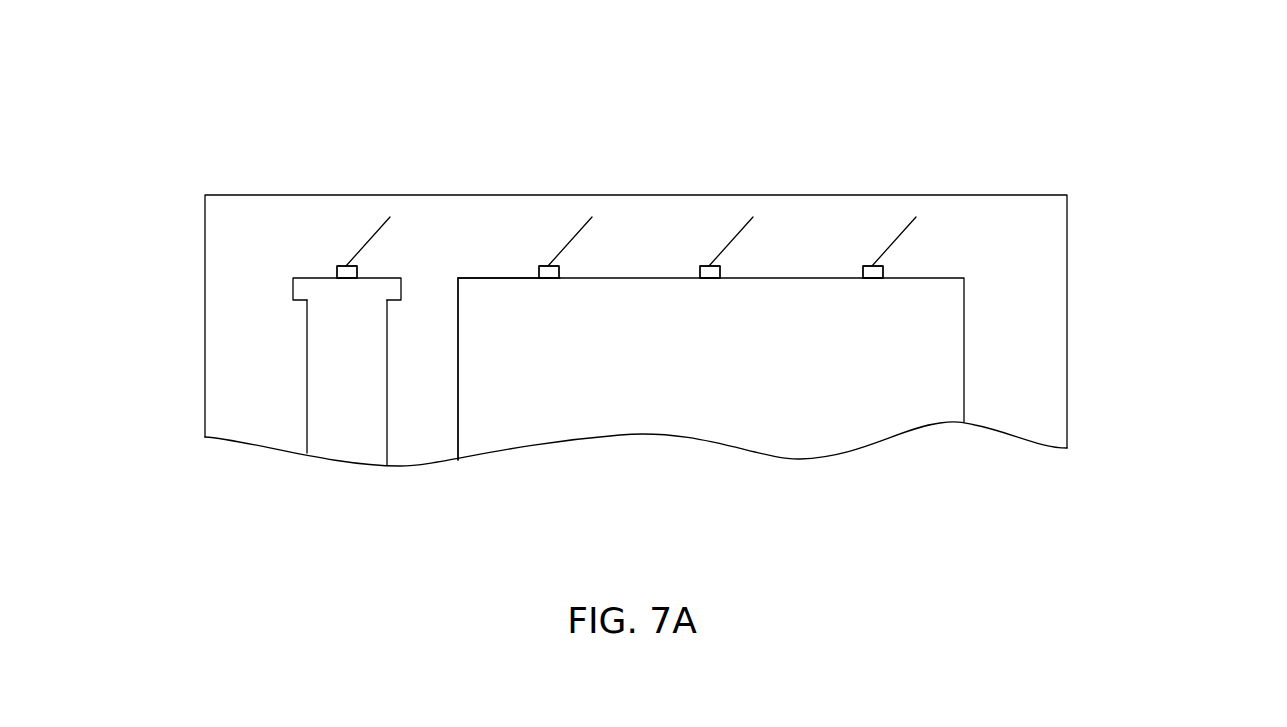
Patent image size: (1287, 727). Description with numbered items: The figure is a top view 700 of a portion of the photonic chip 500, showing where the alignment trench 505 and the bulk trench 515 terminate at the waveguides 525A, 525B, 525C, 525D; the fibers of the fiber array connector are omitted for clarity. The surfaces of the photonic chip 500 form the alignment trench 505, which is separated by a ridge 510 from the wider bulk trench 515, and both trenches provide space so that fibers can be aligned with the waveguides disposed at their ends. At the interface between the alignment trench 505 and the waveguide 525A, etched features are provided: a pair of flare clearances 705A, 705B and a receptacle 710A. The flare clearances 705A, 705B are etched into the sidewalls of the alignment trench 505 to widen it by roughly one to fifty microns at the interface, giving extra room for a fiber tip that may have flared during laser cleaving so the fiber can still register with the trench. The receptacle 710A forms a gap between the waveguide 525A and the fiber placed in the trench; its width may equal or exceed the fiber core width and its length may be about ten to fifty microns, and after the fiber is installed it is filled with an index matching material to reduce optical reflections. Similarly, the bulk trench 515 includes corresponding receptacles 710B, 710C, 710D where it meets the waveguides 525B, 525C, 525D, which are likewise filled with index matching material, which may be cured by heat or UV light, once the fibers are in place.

The top view 700 is at (1100, 45).
The photonic chip 500 is at (1067, 303).
The alignment trench 505 is at (344, 376).
The ridge 510 is at (423, 402).
The bulk trench 515 is at (864, 362).
The flare clearance 705A is at (278, 297).
The flare clearance 705B is at (420, 298).
The receptacle 710A is at (339, 251).
The receptacle 710B is at (541, 251).
The receptacle 710C is at (702, 251).
The receptacle 710D is at (865, 251).
The waveguide 525A is at (358, 253).
The waveguide 525B is at (560, 253).
The waveguide 525C is at (721, 253).
The waveguide 525D is at (884, 253).